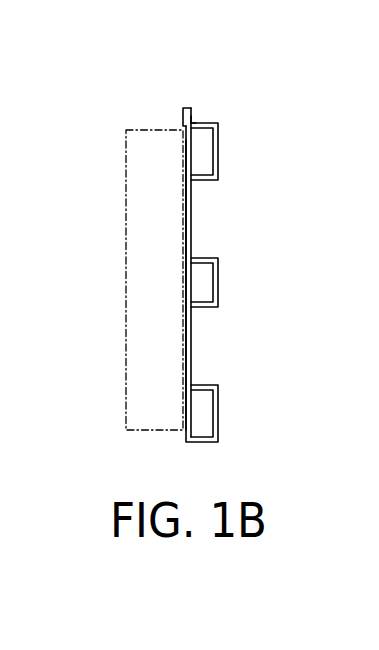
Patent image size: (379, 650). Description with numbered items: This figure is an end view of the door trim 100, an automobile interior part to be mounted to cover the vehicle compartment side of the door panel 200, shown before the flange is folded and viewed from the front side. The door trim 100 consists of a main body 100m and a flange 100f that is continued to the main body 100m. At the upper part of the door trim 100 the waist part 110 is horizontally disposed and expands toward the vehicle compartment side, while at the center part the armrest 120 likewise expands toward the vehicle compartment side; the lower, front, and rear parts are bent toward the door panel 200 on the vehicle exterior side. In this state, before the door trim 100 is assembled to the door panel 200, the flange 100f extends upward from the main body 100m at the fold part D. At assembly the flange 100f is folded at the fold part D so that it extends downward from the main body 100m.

The door trim 100 is at (191, 222).
The flange 100f is at (183, 121).
The main body 100m is at (186, 251).
The waist part 110 is at (218, 137).
The armrest 120 is at (218, 277).
The door panel 200 is at (126, 386).
The fold part D is at (192, 119).